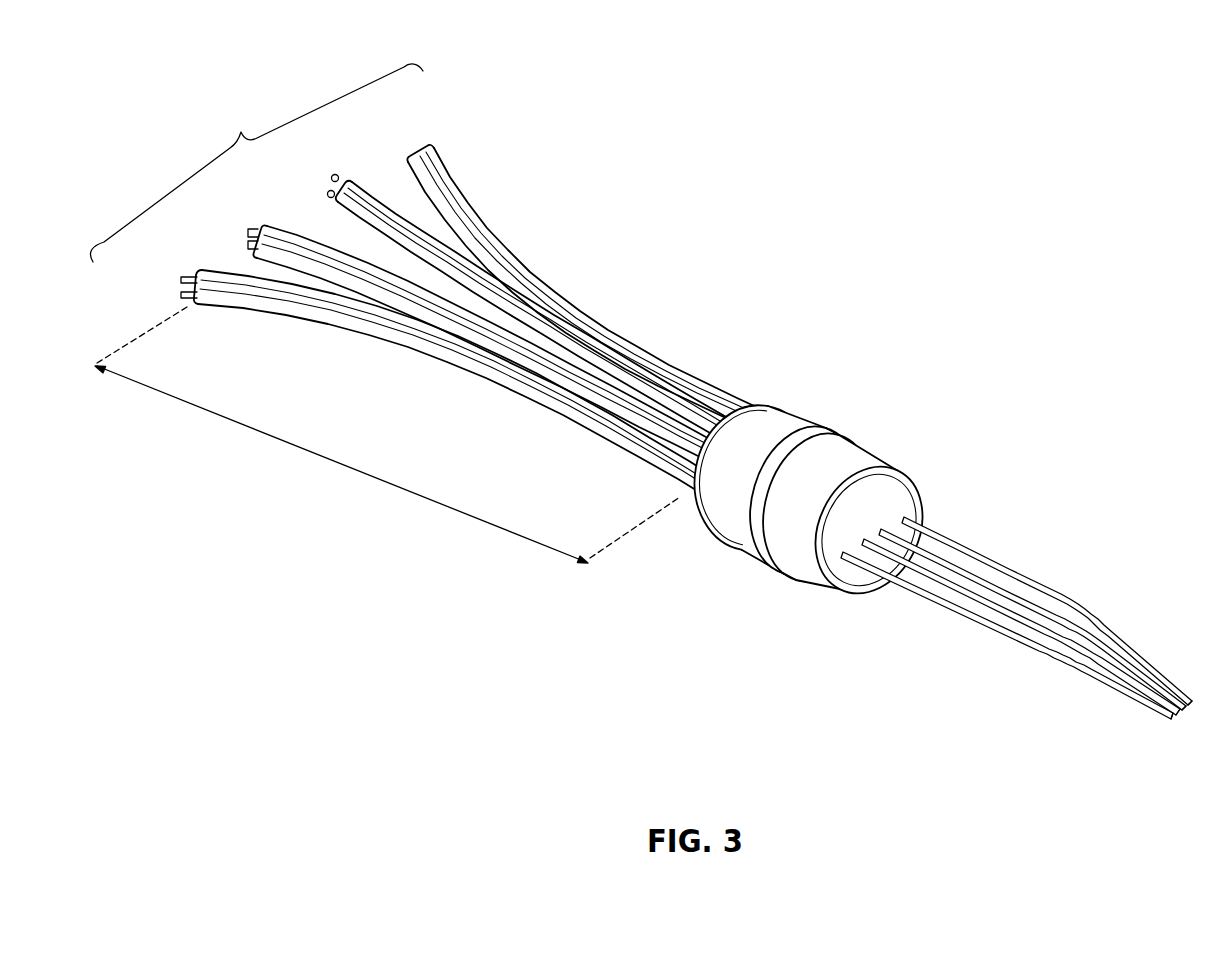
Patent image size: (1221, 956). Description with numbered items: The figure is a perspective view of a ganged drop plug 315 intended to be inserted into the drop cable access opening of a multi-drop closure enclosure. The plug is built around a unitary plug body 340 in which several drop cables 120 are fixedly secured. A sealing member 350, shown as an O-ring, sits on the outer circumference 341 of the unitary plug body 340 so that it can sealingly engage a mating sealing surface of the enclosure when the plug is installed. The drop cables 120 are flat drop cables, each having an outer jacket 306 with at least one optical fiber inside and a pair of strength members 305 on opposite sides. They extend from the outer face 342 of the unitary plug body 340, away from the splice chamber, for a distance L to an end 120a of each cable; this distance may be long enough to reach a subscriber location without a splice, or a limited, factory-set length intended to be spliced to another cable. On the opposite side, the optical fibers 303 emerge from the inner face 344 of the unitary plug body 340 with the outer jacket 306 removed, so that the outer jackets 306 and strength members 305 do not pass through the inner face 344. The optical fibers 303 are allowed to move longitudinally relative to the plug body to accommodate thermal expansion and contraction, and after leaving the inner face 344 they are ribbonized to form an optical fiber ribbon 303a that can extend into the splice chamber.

The ganged drop plug 315 is at (797, 226).
The drop cables 120 is at (633, 353).
The end of the drop cables 120a is at (241, 133).
The outer jacket 306 is at (360, 188).
The strength members 305 is at (275, 205).
The optical fibers 303 is at (1010, 577).
The optical fiber ribbon 303a is at (1155, 713).
The unitary plug body 340 is at (885, 467).
The outer circumference 341 is at (845, 460).
The outer face 342 is at (730, 412).
The inner face 344 is at (903, 500).
The sealing member 350 is at (772, 570).
The distance L is at (343, 466).